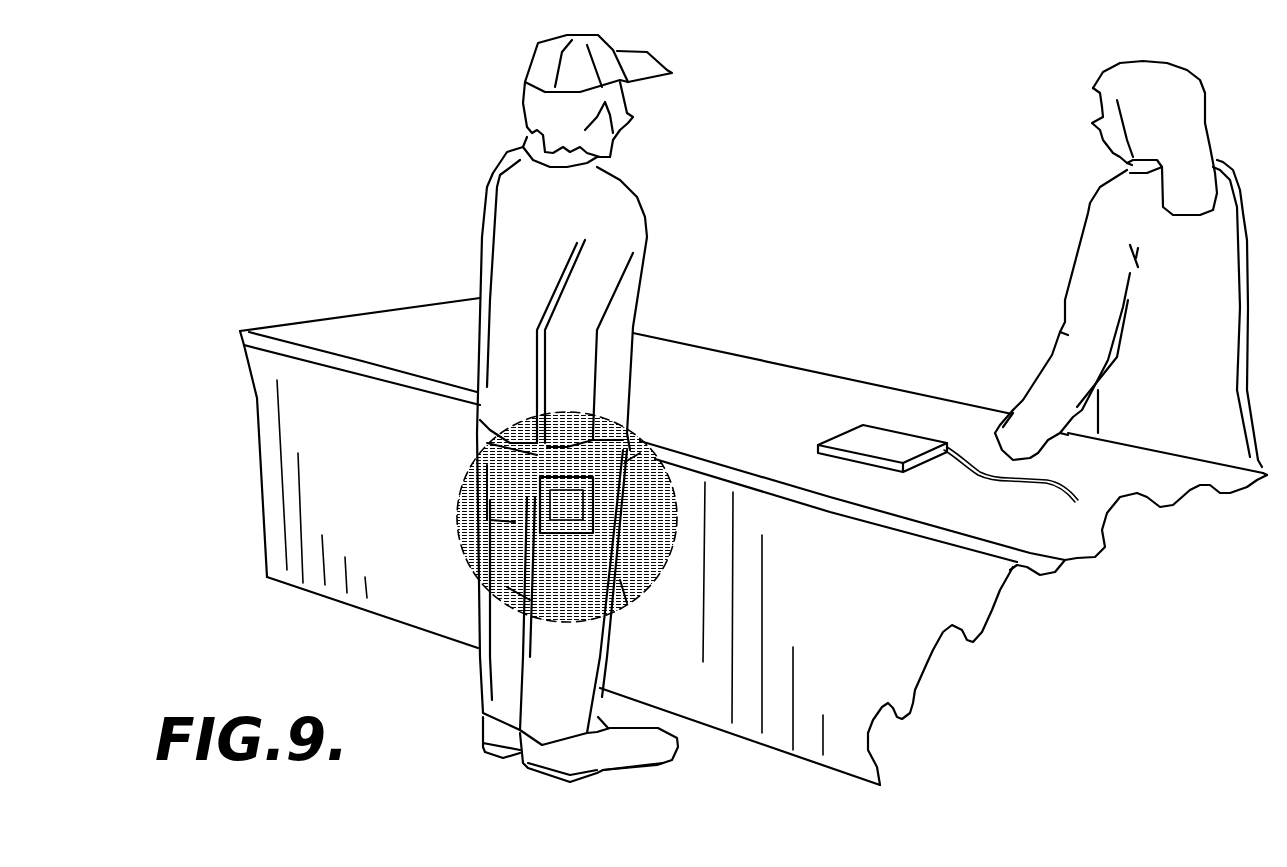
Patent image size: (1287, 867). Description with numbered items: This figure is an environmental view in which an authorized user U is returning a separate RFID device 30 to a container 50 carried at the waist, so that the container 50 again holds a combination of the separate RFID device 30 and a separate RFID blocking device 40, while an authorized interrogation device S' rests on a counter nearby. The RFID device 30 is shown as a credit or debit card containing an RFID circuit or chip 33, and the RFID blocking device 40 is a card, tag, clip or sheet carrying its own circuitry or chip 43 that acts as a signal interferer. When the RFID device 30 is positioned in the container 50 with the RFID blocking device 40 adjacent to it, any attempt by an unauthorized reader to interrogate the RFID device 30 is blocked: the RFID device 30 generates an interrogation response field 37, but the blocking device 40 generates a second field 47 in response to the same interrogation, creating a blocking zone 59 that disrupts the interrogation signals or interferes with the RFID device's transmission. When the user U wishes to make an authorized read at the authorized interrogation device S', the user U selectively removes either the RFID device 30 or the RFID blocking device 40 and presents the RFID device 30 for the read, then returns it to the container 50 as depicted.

The authorized user U is at (502, 260).
The authorized interrogation device S' is at (882, 409).
The separate RFID device 30 is at (633, 573).
The RFID circuit or chip 33 is at (567, 500).
The interrogation response field 37 is at (627, 603).
The separate RFID blocking device 40 is at (487, 468).
The circuitry or chip 43 is at (490, 520).
The second field 47 is at (490, 445).
The container 50 is at (640, 453).
The blocking zone 59 is at (507, 587).